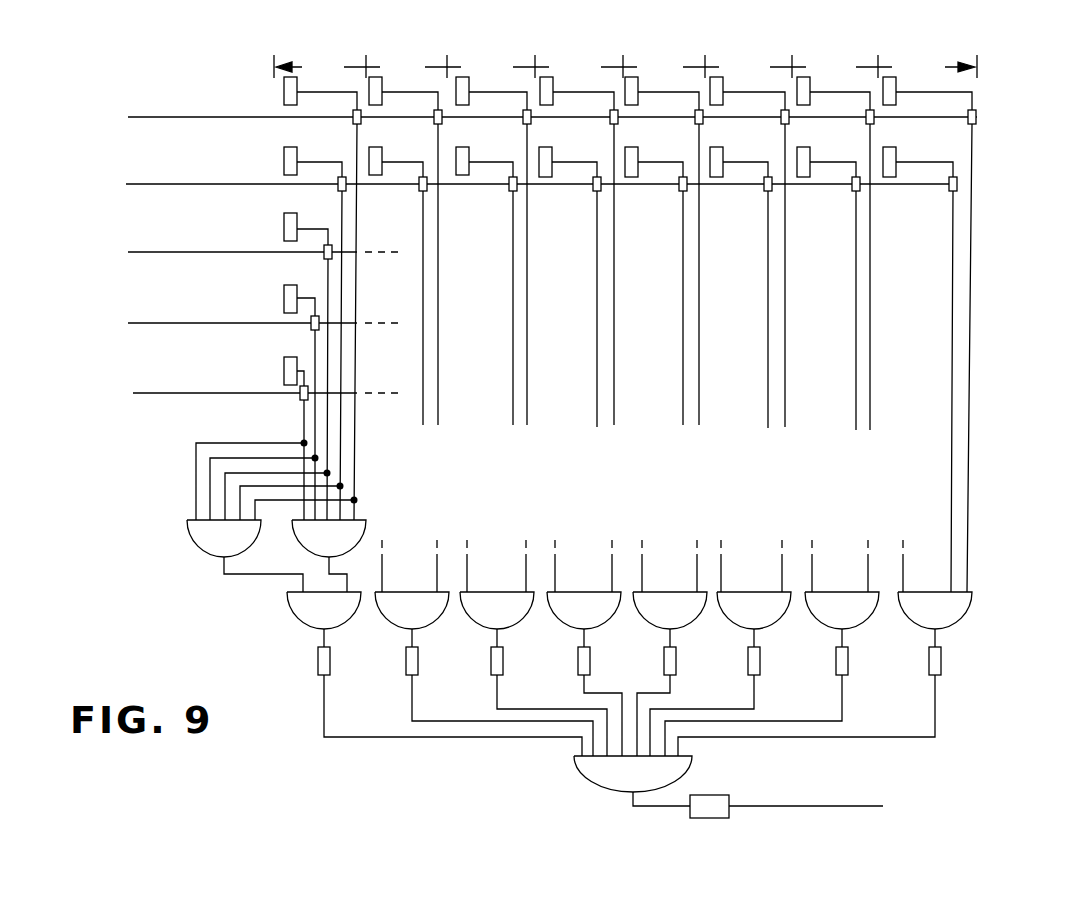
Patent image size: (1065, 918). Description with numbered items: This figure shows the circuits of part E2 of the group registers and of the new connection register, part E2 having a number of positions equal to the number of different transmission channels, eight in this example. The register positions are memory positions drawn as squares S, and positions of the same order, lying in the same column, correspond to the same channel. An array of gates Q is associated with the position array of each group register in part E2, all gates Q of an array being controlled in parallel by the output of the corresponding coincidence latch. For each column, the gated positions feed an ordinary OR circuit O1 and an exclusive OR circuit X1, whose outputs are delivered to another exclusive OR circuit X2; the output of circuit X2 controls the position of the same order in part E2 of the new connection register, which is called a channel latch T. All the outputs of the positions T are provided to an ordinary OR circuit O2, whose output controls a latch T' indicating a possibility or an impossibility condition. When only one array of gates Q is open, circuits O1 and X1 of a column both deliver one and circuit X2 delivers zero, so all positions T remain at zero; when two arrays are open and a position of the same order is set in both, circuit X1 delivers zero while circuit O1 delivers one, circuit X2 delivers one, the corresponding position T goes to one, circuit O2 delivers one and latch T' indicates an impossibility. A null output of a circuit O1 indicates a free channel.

The part E2 of the registers E2 is at (625, 46).
The register position S is at (628, 231).
The gate Q is at (551, 351).
The ordinary OR circuit O1 is at (272, 516).
The exclusive OR circuit X1 is at (329, 556).
The exclusive OR circuit X2 is at (629, 584).
The channel latch T is at (638, 652).
The ordinary OR circuit O2 is at (629, 733).
The latch T' is at (758, 805).